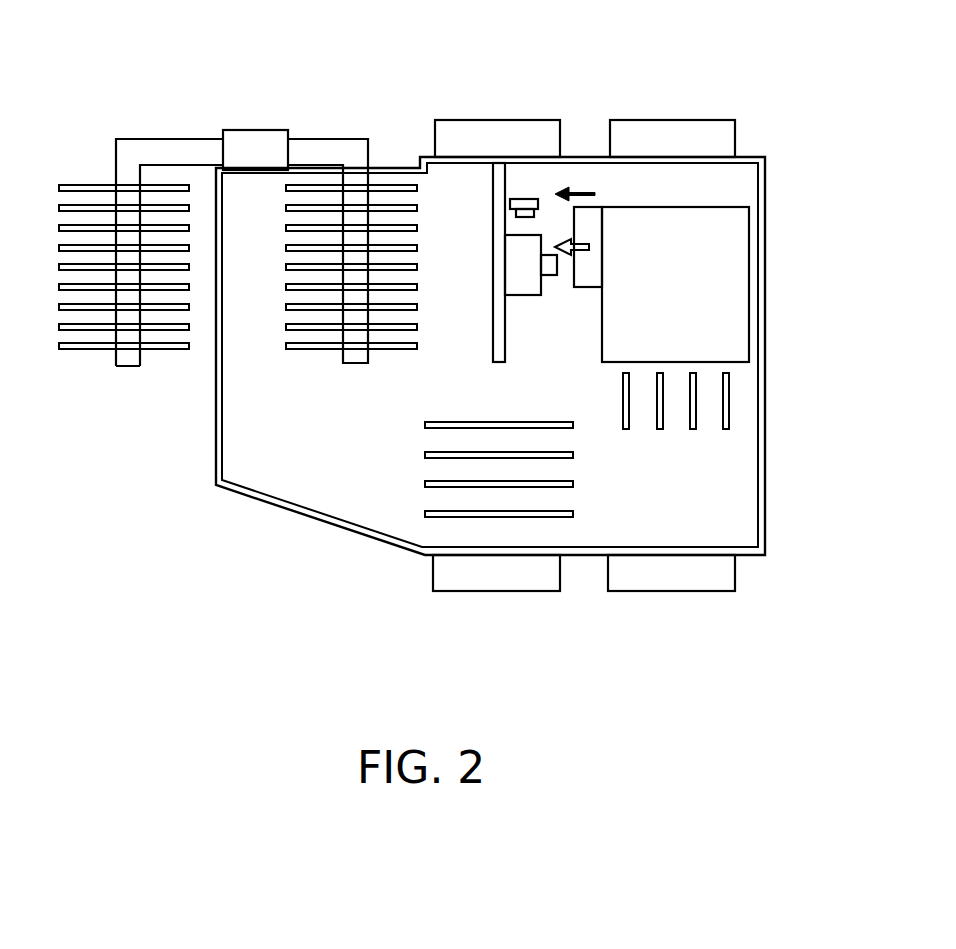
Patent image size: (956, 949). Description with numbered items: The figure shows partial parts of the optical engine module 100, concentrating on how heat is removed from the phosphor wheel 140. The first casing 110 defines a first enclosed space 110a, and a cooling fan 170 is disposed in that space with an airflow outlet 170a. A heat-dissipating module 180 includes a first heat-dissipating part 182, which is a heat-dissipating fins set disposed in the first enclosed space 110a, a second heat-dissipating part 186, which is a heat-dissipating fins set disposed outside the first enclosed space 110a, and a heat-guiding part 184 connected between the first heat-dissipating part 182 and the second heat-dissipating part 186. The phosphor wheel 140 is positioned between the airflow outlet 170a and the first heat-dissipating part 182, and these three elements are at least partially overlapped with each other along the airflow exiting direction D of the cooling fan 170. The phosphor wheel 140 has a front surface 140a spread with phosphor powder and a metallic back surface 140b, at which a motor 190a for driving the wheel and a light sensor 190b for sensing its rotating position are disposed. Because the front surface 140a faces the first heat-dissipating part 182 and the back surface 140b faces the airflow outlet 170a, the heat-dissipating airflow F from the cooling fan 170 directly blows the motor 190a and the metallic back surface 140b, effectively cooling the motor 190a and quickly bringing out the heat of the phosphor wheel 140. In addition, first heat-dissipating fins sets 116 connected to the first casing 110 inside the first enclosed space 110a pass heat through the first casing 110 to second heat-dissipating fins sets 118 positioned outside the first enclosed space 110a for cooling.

The optical engine module 100 is at (778, 710).
The first casing 110 is at (318, 520).
The first enclosed space 110a is at (292, 442).
The first heat-dissipating fins set 116 is at (500, 513).
The second heat-dissipating fins set 118 is at (657, 568).
The phosphor wheel 140 is at (477, 352).
The front surface 140a is at (493, 253).
The back surface 140b is at (518, 181).
The cooling fan 170 is at (740, 228).
The airflow outlet 170a is at (593, 280).
The heat-dissipating module 180 is at (238, 186).
The first heat-dissipating part 182 is at (351, 200).
The heat-guiding part 184 is at (303, 147).
The second heat-dissipating part 186 is at (168, 187).
The motor 190a is at (517, 250).
The light sensor 190b is at (525, 202).
The airflow exiting direction D is at (582, 189).
The heat-dissipating airflow F is at (590, 248).